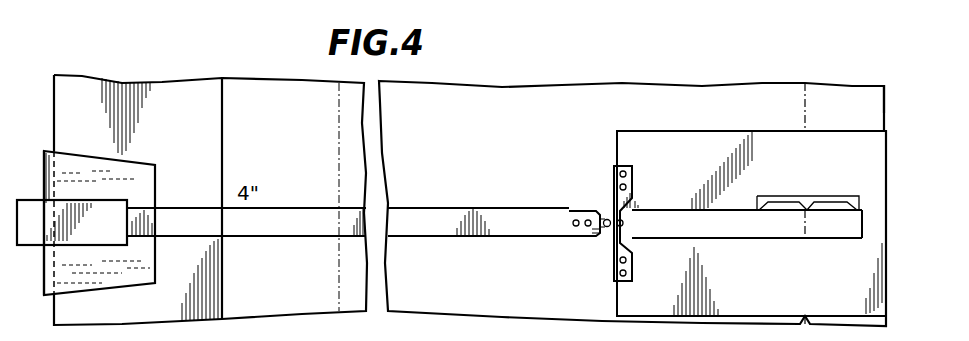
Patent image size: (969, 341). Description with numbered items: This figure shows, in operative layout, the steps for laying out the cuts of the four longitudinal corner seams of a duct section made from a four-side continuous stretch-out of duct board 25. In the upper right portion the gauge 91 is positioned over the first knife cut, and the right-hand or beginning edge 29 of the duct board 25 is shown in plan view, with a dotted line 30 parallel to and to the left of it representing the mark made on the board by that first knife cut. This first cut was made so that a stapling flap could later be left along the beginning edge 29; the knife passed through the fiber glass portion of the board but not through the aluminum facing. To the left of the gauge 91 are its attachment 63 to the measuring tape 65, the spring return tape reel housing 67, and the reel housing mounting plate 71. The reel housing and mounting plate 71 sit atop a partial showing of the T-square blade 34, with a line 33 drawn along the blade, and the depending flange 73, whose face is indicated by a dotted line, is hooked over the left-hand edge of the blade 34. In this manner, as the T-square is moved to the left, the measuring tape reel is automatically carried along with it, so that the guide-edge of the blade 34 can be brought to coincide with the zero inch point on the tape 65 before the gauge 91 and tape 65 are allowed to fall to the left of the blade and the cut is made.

The duct board 25 is at (590, 124).
The beginning edge 29 is at (886, 86).
The dotted line 30 is at (802, 120).
The joint line 33 is at (222, 145).
The T-square blade 34 is at (176, 119).
The attachment 63 is at (607, 208).
The measuring tape 65 is at (549, 212).
The spring return tape reel housing 67 is at (45, 205).
The reel housing mounting plate 71 is at (97, 160).
The depending flange 73 is at (42, 260).
The gauge 91 is at (627, 128).